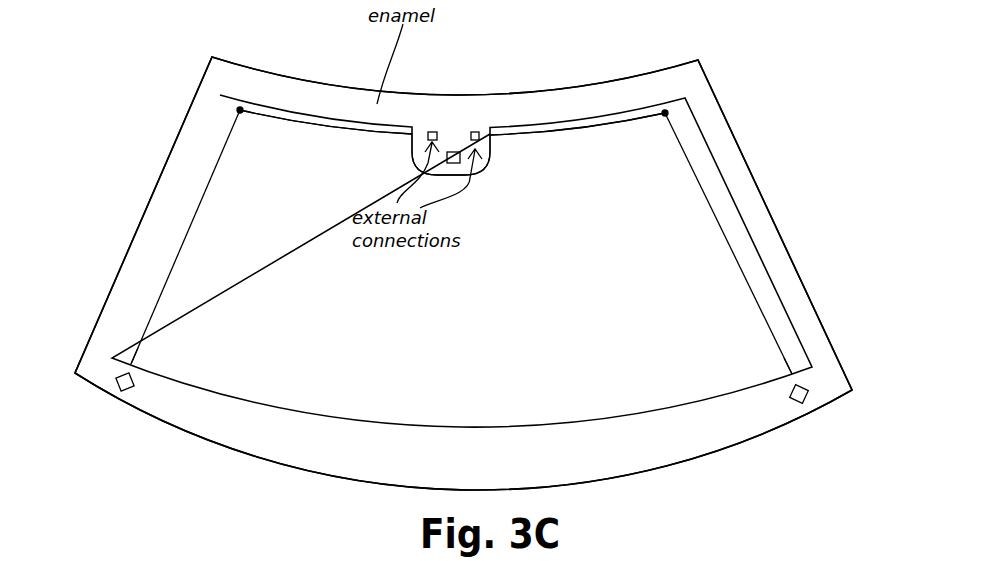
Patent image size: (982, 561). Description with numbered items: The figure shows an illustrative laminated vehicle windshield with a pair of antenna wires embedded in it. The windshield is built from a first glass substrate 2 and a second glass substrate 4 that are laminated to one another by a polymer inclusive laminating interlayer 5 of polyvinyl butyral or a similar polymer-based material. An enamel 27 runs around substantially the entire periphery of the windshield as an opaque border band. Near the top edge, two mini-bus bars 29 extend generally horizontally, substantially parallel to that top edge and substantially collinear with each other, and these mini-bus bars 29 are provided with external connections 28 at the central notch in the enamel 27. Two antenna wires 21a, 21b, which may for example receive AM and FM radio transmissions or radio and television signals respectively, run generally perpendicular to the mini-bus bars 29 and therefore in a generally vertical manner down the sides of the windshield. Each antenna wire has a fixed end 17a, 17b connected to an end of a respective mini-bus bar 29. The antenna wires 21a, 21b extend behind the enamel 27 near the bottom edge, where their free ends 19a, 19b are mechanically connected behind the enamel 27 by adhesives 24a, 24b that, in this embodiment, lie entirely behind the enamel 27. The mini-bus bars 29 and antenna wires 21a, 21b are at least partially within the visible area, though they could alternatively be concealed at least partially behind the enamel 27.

The first glass substrate 2 is at (190, 333).
The second glass substrate 4 is at (190, 333).
The polymer inclusive laminating interlayer 5 is at (250, 208).
The fixed end 17a is at (242, 109).
The fixed end 17b is at (665, 112).
The free end 19a is at (133, 397).
The free end 19b is at (808, 398).
The antenna wire 21a is at (220, 153).
The antenna wire 21b is at (735, 198).
The adhesive 24a is at (113, 392).
The adhesive 24b is at (802, 405).
The enamel 27 is at (197, 113).
The external connections 28 is at (436, 131).
The mini-bus bars 29 is at (319, 126).